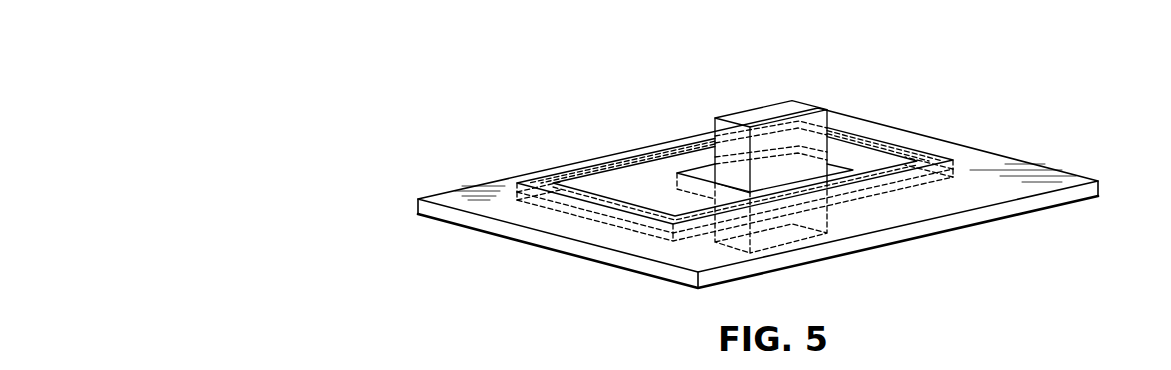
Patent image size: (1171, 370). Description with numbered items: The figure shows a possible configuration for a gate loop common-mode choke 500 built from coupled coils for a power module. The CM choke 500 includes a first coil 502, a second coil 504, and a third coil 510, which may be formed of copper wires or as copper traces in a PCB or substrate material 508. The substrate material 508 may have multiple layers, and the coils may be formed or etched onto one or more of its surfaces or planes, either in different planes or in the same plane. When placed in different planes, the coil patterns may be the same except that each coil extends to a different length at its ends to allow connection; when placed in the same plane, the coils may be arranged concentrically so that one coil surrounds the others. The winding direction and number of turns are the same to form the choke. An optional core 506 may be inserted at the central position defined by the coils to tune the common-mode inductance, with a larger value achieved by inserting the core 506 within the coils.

The gate loop common-mode choke 500 is at (532, 76).
The first coil 502 is at (636, 151).
The second coil 504 is at (598, 222).
The core 506 is at (775, 102).
The substrate material 508 is at (497, 234).
The third coil 510 is at (869, 205).